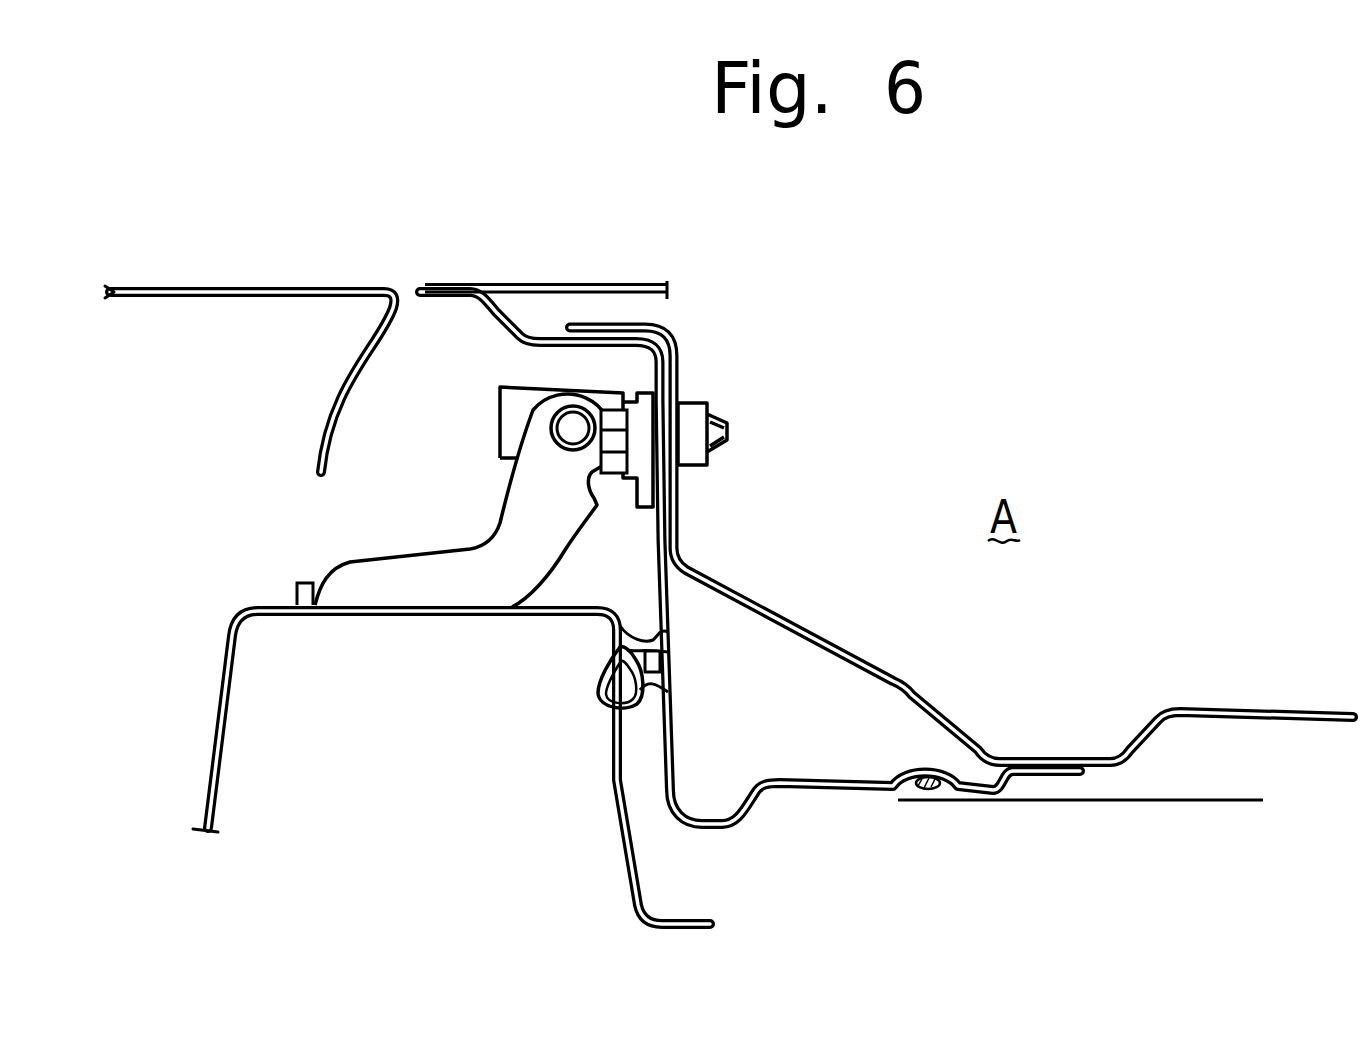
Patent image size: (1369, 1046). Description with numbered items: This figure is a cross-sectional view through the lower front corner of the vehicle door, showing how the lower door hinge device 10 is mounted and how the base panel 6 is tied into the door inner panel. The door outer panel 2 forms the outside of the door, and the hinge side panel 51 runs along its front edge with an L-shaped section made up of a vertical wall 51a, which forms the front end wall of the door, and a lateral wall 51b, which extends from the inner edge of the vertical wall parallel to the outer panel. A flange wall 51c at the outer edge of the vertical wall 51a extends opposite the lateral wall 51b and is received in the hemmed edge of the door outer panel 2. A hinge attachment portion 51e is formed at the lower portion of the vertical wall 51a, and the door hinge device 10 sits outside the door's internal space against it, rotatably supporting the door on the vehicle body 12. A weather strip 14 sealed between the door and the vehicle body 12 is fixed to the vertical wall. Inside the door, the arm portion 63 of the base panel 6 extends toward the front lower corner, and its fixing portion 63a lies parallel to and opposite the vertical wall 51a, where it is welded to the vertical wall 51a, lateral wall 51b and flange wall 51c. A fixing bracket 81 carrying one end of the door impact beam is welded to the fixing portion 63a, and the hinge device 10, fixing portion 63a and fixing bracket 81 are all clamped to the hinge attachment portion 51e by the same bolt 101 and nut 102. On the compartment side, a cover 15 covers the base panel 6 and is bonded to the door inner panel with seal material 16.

The door outer panel 2 is at (629, 281).
The base panel 6 is at (926, 672).
The door hinge device 10 is at (397, 568).
The vehicle body 12 is at (620, 788).
The weather strip 14 is at (600, 700).
The cover 15 is at (1109, 803).
The seal material 16 is at (933, 800).
The hinge side panel 51 is at (759, 826).
The vertical wall 51a is at (648, 593).
The lateral wall 51b is at (860, 789).
The flange wall 51c is at (536, 338).
The hinge attachment portion 51e is at (657, 377).
The arm portion 63 is at (957, 723).
The fixing portion 63a is at (673, 517).
The fixing bracket 81 is at (668, 340).
The bolt 101 is at (613, 443).
The nut 102 is at (690, 443).